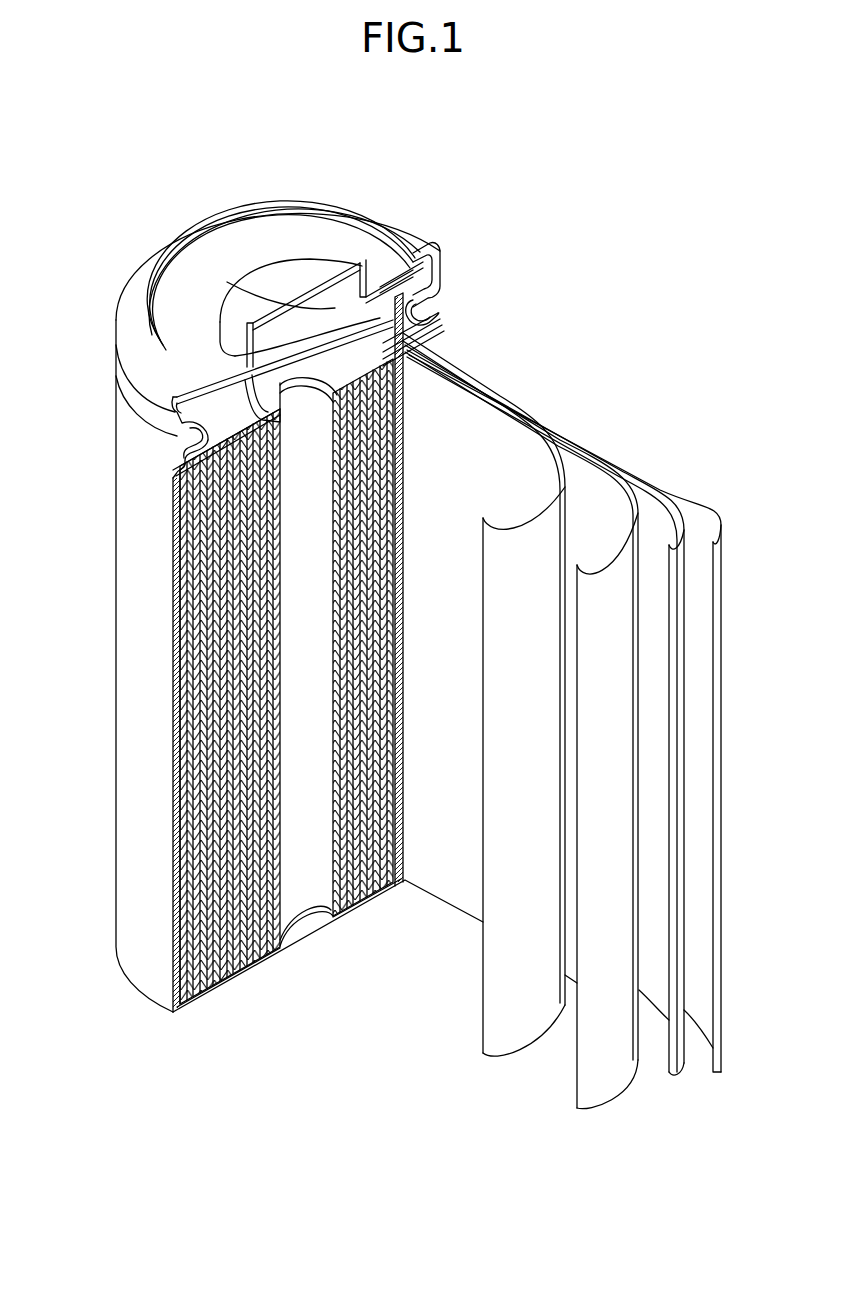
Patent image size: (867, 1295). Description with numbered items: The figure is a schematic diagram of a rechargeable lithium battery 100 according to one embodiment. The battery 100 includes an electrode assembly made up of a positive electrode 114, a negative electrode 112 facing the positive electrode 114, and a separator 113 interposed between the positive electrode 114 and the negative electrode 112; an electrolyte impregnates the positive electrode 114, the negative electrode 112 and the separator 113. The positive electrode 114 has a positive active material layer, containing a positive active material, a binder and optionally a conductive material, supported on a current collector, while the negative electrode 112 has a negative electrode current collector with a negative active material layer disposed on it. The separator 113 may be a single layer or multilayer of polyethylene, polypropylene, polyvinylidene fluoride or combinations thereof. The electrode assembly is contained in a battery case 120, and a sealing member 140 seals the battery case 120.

The rechargeable lithium battery 100 is at (503, 192).
The negative electrode 112 is at (719, 521).
The separator 113 is at (520, 414).
The positive electrode 114 is at (603, 467).
The battery case 120 is at (136, 613).
The sealing member 140 is at (245, 276).